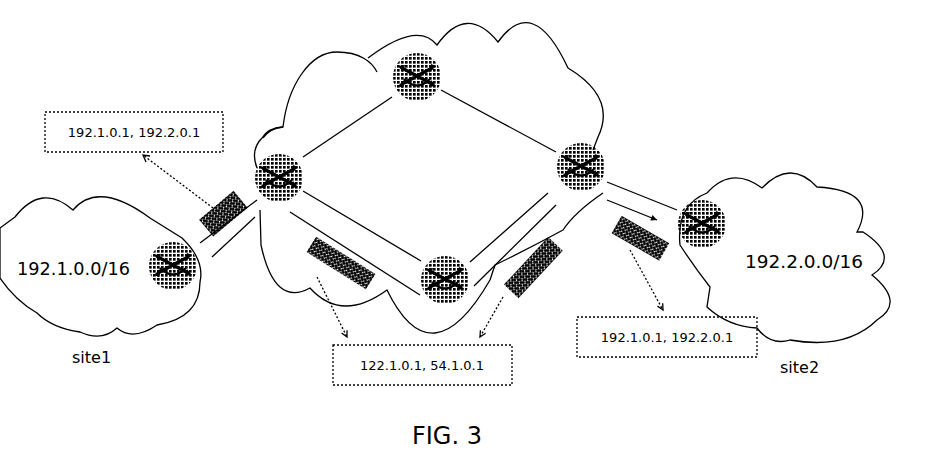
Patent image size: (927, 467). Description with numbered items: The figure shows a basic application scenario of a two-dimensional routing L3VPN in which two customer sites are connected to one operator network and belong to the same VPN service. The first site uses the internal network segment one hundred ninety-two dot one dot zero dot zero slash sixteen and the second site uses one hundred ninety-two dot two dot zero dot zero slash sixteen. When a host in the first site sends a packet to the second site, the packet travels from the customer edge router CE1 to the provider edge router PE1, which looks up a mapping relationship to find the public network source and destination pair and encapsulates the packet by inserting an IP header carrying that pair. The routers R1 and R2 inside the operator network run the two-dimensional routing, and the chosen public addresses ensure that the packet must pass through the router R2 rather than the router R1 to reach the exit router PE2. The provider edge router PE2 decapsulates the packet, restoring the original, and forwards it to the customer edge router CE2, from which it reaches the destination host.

The router R1 is at (417, 91).
The ingress provider edge router PE1 is at (279, 191).
The router R2 is at (445, 293).
The destination exit provider edge router PE2 is at (581, 181).
The customer edge router CE1 is at (173, 278).
The customer edge router CE2 is at (702, 237).